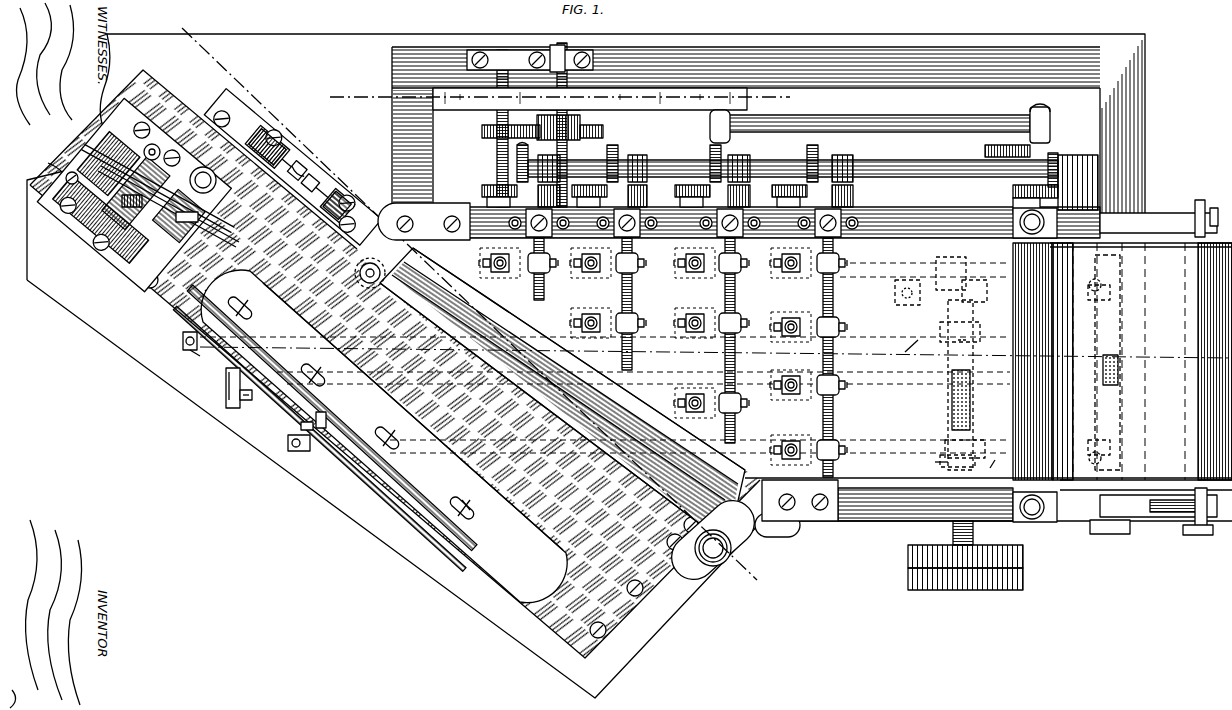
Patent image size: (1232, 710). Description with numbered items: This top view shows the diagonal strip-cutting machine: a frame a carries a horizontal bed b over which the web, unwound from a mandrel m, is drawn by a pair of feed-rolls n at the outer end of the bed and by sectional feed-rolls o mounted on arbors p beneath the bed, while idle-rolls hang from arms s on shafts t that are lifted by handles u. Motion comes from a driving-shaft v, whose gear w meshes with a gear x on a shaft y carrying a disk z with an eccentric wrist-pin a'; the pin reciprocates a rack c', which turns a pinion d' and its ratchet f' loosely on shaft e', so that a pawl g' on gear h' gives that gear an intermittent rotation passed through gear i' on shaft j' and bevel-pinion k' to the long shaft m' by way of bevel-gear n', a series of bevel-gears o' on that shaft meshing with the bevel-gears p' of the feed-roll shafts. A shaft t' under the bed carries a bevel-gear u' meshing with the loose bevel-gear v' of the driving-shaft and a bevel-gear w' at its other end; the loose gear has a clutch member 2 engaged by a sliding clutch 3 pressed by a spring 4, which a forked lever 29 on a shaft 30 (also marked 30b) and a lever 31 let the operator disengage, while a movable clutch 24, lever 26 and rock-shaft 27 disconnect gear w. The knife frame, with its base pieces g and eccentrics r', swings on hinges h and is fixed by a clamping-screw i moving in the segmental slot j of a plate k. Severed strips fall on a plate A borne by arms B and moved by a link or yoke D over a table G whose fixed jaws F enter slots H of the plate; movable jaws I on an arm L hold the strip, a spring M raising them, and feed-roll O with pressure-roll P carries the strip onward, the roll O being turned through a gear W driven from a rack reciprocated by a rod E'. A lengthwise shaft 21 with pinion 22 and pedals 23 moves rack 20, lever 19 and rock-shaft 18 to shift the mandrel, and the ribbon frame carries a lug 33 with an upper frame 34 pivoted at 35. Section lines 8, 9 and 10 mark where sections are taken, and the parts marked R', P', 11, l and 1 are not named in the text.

The bed or table G is at (527, 657).
The link or yoke D is at (293, 166).
The gear W is at (266, 170).
The rod E' is at (297, 178).
The eccentrics r' is at (335, 196).
The pressure-roll P is at (134, 194).
The rod R' is at (158, 153).
The rod P' is at (168, 169).
The spring M is at (162, 143).
The feed-roll O is at (183, 181).
The pivot 35 is at (78, 178).
The lug 33 is at (132, 206).
The frame 34 is at (191, 221).
The pipe 11 is at (48, 163).
The section line 8 8 is at (428, 563).
The laterally-reciprocating plate or carrier A is at (413, 416).
The fixed jaws or projections F is at (326, 420).
The slots H is at (252, 300).
The movable jaws I is at (252, 303).
The pin l is at (462, 499).
The shaft 30 is at (183, 338).
The lever 31 is at (190, 351).
The shaft 21 is at (226, 388).
The arms or pedals 23 is at (243, 402).
The rock-shaft 27 is at (290, 444).
The arm L is at (319, 451).
The bevel-gear w' is at (562, 396).
The arms B is at (554, 414).
The horizontal top and bottom pieces g is at (579, 430).
The hinges h is at (370, 262).
The plate k is at (713, 552).
The clamping-screw i is at (714, 560).
The segmental slot j is at (601, 531).
The section line 10 10 is at (473, 298).
The frame a is at (739, 354).
The handles u is at (692, 211).
The shaft j' is at (489, 128).
The shaft e' is at (530, 111).
The pawl g' is at (547, 108).
The pinion d' is at (600, 55).
The section line 9 9 is at (558, 99).
The gear i' is at (501, 130).
The ratchet f' is at (577, 125).
The gear h' is at (607, 136).
The long shaft m' is at (793, 162).
The bevel-gears o' is at (809, 163).
The bevel-gear n' is at (529, 161).
The bevel-pinion k' is at (488, 194).
The bevel-gears p' is at (797, 152).
The rack c' is at (705, 126).
The wrist-pin a' is at (1082, 123).
The disk z is at (985, 151).
The shaft y is at (1013, 184).
The feed-rolls n is at (1046, 361).
The roller 1 is at (1215, 389).
The rack 20 is at (1108, 352).
The pinion 22 is at (1118, 373).
The bed or table b is at (888, 488).
The driving-shaft v is at (965, 555).
The lever 19 is at (1130, 522).
The rock-shaft 18 is at (1168, 520).
The mandrel m is at (1198, 521).
The shaft t is at (694, 357).
The arms s is at (548, 258).
The feed-rolls o is at (667, 347).
The arbors p is at (644, 350).
The bevel-gear u' is at (955, 269).
The loose bevel-gear v' is at (980, 286).
The shaft t' is at (901, 292).
The sliding clutch 3 is at (975, 352).
The spring 4 is at (972, 400).
The clutch member 2 is at (978, 330).
The lever 29 is at (975, 345).
The bracket 30b is at (920, 336).
The movable clutch 24 is at (978, 441).
The gear x is at (998, 454).
The gear w is at (933, 465).
The lever 26 is at (961, 464).